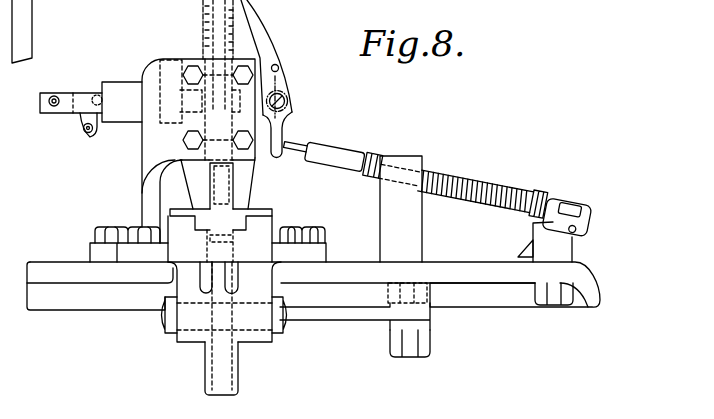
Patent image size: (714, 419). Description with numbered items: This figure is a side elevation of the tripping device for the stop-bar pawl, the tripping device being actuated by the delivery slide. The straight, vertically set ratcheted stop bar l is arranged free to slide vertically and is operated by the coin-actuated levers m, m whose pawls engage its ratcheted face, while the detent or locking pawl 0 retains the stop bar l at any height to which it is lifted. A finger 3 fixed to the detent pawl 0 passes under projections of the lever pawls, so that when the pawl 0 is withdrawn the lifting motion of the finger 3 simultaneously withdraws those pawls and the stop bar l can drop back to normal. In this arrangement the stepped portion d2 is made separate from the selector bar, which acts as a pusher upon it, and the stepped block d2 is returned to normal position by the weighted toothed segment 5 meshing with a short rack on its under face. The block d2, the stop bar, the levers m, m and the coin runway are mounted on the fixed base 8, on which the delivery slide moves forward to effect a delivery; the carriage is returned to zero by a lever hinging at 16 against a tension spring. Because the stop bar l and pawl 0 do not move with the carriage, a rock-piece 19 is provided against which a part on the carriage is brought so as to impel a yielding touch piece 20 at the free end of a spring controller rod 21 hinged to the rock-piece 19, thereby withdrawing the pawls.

The stop bar l is at (202, 22).
The coin-actuated levers m is at (54, 95).
The detent pawl 0 is at (271, 41).
The finger 3 is at (280, 67).
The yielding touch piece 20 is at (297, 145).
The spring controller rod 21 is at (458, 184).
The rock-piece 19 is at (525, 243).
The fixed base 8 is at (346, 266).
The hinge 16 is at (343, 322).
The weighted toothed segment 5 is at (222, 377).
The stepped portion d2 is at (218, 227).